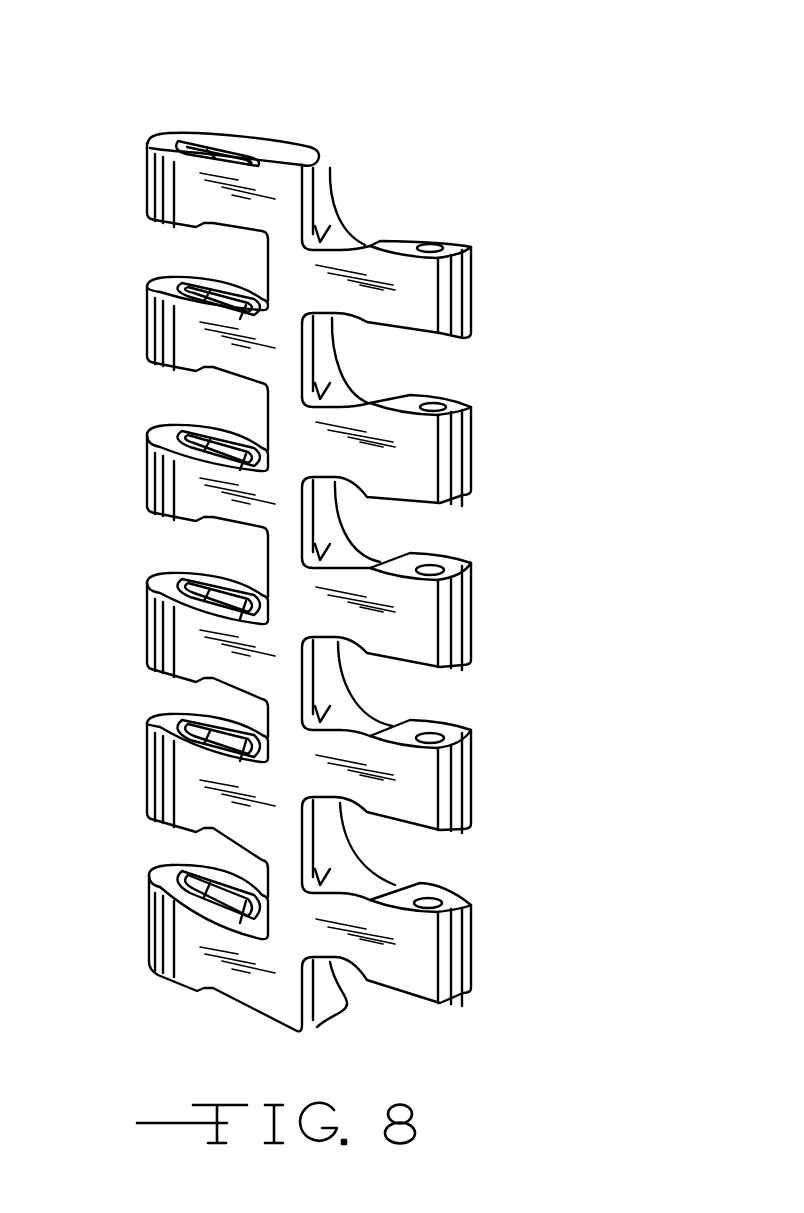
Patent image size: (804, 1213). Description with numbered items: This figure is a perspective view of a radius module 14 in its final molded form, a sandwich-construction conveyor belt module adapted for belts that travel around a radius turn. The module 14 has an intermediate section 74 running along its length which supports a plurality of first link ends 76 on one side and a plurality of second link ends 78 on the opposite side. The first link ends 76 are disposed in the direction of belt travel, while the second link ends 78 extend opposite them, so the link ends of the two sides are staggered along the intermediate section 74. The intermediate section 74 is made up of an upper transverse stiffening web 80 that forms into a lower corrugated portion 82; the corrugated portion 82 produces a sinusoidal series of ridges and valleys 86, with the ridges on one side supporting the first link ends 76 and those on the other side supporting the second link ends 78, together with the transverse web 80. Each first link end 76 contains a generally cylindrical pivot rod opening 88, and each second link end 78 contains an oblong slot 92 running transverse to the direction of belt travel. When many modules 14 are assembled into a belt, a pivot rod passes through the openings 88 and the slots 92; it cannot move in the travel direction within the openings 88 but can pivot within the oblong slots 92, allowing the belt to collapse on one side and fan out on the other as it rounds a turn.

The radius module 14 is at (580, 78).
The intermediate section 74 is at (320, 156).
The first link ends 76 is at (426, 257).
The second link ends 78 is at (176, 157).
The transverse stiffening web 80 is at (287, 198).
The corrugated portion 82 is at (330, 200).
The valleys 86 is at (330, 355).
The pivot rod openings 88 is at (431, 244).
The oblong slots 92 is at (228, 143).